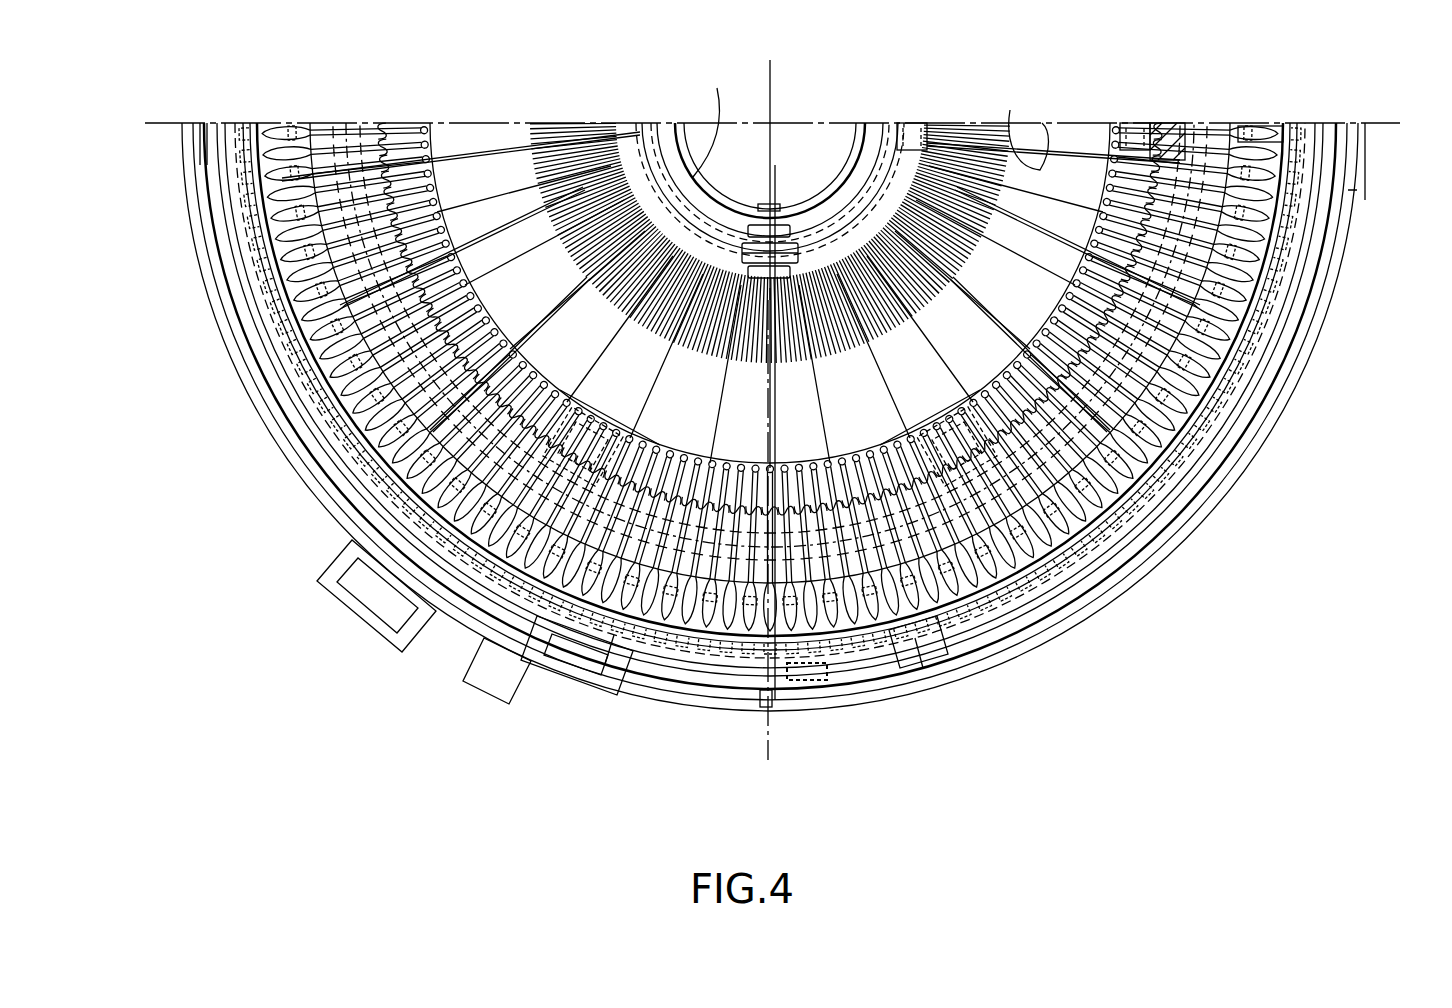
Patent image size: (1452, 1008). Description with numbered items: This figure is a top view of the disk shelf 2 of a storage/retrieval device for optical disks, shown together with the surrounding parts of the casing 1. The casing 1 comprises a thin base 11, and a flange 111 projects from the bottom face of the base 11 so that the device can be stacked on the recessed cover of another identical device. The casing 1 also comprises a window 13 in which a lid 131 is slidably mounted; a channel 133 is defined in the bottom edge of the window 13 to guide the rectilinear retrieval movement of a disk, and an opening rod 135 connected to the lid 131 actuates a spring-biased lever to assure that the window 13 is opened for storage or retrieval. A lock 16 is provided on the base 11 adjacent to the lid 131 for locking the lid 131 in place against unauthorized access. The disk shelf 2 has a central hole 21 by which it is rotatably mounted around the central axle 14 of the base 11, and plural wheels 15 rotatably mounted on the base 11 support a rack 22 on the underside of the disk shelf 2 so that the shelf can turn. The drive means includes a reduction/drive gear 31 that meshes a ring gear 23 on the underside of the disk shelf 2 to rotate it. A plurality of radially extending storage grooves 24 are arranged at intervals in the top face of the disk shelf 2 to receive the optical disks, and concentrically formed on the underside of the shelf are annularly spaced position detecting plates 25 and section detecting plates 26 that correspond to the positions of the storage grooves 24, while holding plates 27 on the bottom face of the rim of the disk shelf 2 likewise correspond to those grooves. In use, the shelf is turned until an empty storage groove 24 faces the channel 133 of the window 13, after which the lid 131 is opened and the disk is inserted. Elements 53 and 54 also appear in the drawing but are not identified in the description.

The casing 1 is at (268, 440).
The disk shelf 2 is at (1324, 128).
The thin base 11 is at (1280, 378).
The flange 111 is at (1335, 192).
The window 13 is at (650, 700).
The central axle 14 is at (745, 172).
The wheels 15 is at (822, 245).
The lock 16 is at (555, 677).
The central hole 21 is at (857, 165).
The rack 22 is at (912, 123).
The ring gear 23 is at (1170, 125).
The storage grooves 24 is at (642, 135).
The position detecting plates 25 is at (338, 235).
The section detecting plates 26 is at (537, 180).
The holding plates 27 is at (287, 360).
The reduction/drive gear 31 is at (1244, 125).
The mounting tab 53 is at (493, 677).
The mounting tab 54 is at (380, 587).
The lid 131 is at (950, 635).
The channel 133 is at (768, 707).
The opening rod 135 is at (808, 690).